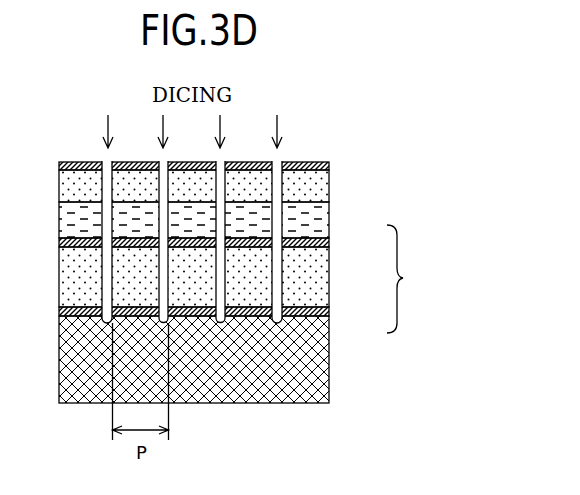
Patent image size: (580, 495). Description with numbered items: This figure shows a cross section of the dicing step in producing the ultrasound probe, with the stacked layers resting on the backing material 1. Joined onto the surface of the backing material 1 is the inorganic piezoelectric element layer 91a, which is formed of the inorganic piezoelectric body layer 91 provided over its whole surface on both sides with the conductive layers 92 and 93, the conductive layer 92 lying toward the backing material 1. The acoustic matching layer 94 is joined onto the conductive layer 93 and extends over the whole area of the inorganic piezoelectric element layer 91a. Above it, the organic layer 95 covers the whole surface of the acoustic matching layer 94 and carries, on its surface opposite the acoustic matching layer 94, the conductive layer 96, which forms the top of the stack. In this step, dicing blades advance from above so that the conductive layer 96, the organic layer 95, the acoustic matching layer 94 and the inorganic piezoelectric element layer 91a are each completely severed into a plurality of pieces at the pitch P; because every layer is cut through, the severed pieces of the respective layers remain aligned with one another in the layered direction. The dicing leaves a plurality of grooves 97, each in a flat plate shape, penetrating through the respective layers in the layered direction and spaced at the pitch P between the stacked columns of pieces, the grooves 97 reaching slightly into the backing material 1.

The backing material 1 is at (329, 389).
The inorganic piezoelectric body layer 91 is at (329, 278).
The inorganic piezoelectric element layer 91a is at (420, 279).
The conductive layer 92 is at (329, 316).
The conductive layer 93 is at (329, 243).
The acoustic matching layer 94 is at (329, 220).
The organic layer 95 is at (329, 185).
The conductive layer 96 is at (329, 164).
The grooves 97 is at (102, 283).